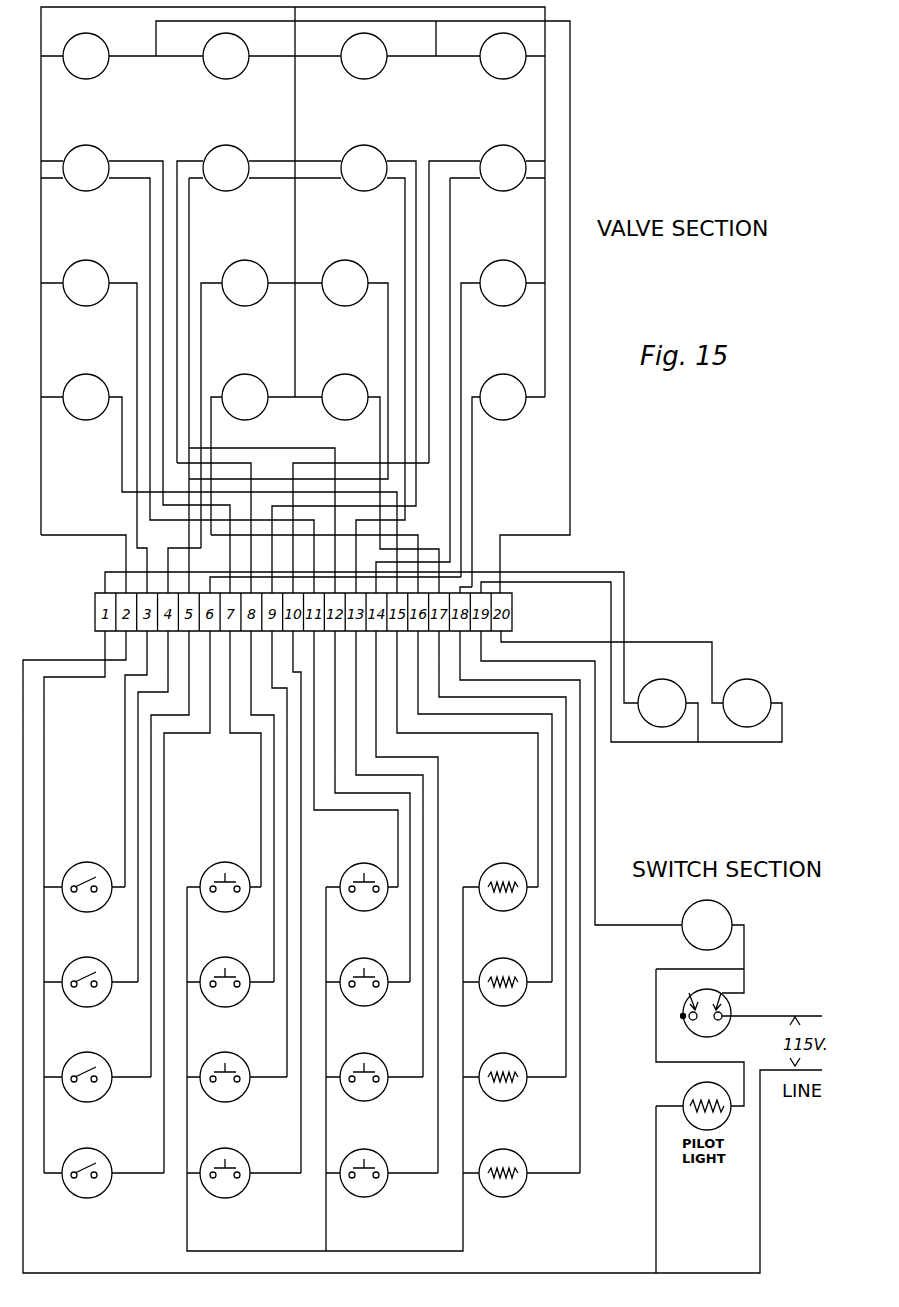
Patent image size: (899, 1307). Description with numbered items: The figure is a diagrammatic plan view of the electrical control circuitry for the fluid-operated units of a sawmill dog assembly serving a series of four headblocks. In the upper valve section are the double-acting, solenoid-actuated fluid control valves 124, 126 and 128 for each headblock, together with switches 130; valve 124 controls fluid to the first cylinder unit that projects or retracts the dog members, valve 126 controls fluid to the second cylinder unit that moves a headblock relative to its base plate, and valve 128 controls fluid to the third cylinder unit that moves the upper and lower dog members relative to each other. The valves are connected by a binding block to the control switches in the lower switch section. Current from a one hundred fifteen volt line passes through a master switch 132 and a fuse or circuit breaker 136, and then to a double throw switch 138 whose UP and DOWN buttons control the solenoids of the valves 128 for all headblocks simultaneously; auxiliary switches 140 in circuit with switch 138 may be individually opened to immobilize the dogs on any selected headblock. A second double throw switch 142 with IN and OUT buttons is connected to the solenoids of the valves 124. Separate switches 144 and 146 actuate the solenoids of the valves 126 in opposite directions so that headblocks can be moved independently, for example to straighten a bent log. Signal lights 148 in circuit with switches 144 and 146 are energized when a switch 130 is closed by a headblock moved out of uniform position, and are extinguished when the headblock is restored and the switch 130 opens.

The fluid control valve 124 is at (96, 50).
The fluid control valve 126 is at (92, 157).
The fluid control valve 128 is at (90, 268).
The switch 130 is at (91, 380).
The master switch 132 is at (731, 1008).
The fuse or circuit breaker 136 is at (731, 917).
The double throw switch 138 is at (666, 682).
The double throw switch 142 is at (757, 692).
The auxiliary switch 140 is at (79, 870).
The switch 144 is at (357, 864).
The switch 146 is at (229, 862).
The signal light 148 is at (498, 864).